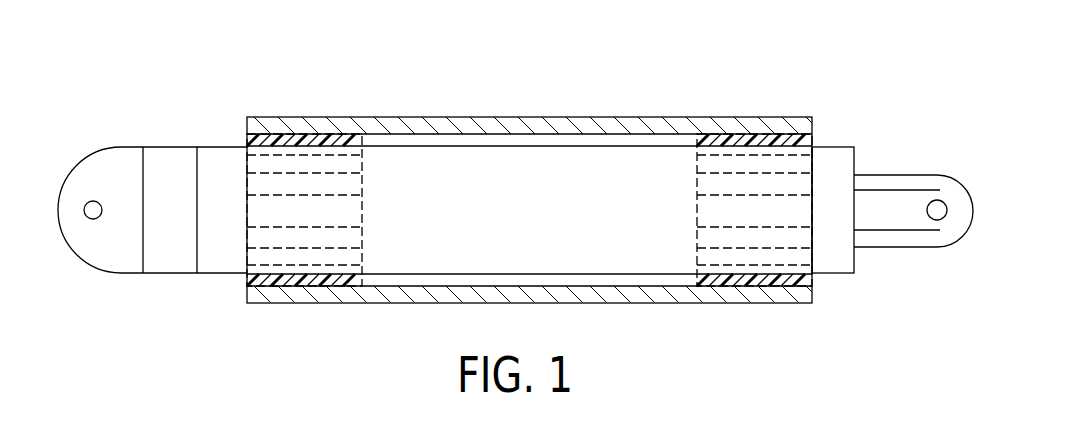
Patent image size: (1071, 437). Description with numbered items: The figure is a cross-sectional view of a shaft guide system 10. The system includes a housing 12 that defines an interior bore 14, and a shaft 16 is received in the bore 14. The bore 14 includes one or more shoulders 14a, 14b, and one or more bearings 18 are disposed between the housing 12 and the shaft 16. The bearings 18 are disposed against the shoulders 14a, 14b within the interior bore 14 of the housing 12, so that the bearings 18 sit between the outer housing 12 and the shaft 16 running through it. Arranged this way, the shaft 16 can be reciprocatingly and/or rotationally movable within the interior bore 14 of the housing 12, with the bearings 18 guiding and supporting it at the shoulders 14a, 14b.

The shaft guide system 10 is at (424, 58).
The housing 12 is at (622, 131).
The interior bore 14 is at (548, 140).
The shoulder 14a is at (352, 286).
The shoulder 14b is at (700, 286).
The shaft 16 is at (540, 262).
The bearing 18 is at (303, 137).